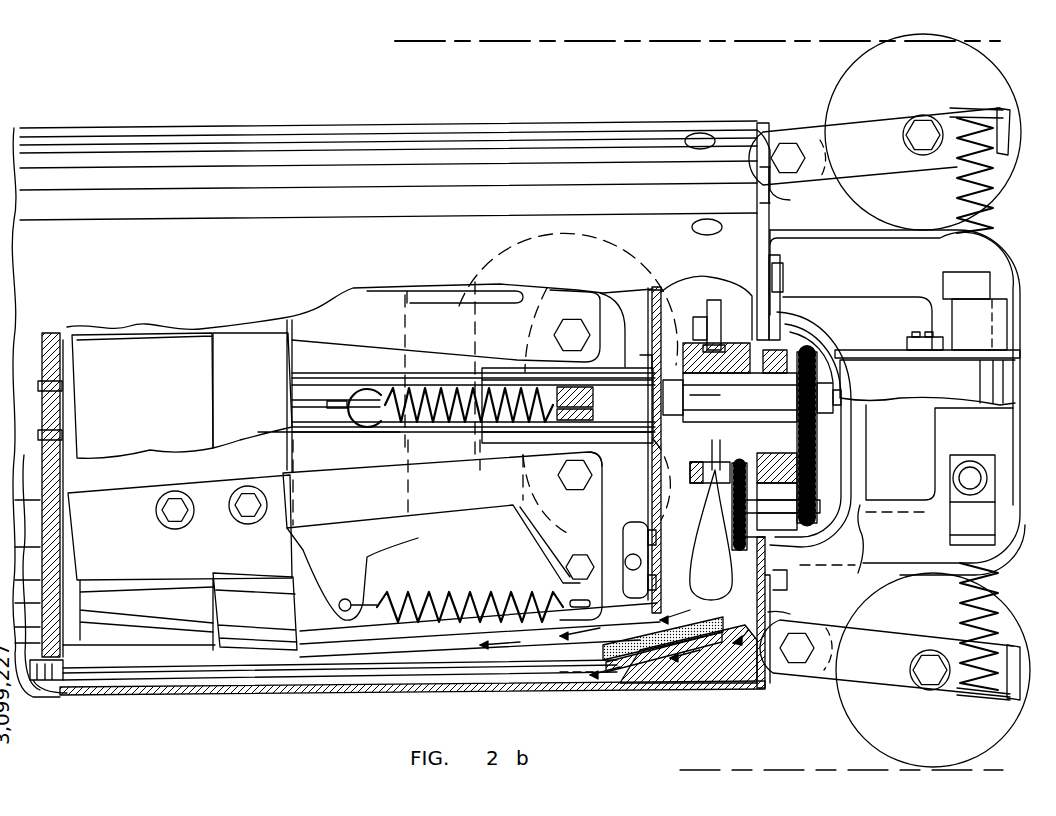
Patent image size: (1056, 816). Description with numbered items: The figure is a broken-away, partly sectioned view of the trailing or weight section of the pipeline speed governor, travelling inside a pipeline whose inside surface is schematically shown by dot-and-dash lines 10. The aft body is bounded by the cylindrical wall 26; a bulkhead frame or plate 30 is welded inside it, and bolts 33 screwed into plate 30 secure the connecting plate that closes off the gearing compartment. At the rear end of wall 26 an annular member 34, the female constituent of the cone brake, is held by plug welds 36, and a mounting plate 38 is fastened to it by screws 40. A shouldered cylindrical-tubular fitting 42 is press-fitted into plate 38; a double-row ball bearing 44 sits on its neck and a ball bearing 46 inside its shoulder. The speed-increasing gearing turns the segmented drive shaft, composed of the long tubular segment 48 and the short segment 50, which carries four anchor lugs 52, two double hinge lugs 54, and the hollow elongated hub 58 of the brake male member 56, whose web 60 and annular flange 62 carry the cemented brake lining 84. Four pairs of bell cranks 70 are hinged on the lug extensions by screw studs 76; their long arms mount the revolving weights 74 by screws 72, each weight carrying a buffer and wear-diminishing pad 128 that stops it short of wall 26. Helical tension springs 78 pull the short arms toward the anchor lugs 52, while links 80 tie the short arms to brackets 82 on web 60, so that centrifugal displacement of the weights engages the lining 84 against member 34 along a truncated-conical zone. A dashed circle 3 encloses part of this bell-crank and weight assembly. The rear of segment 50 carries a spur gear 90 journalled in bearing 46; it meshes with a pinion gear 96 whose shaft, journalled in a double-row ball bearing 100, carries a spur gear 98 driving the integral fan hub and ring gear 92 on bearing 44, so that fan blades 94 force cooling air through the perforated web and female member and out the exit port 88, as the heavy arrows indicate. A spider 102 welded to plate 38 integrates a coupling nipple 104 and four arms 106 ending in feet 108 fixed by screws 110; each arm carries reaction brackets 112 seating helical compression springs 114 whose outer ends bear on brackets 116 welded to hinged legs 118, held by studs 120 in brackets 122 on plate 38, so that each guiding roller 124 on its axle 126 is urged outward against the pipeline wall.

The detail circle 3 is at (568, 373).
The dot-and-dash lines 10 is at (660, 41).
The cylindrical wall 26 is at (360, 286).
The bulkhead frame or plate 30 is at (60, 477).
The bolts 33 is at (66, 670).
The annular member 34 is at (682, 682).
The plug welds 36 is at (707, 218).
The mounting plate 38 is at (735, 680).
The screws 40 is at (770, 190).
The shouldered cylindrical-tubular fitting 42 is at (745, 380).
The double-row ball bearing 44 is at (685, 360).
The ball bearing 46 is at (810, 460).
The tubular relatively long segment 48 is at (290, 438).
The relatively short segment 50 is at (703, 402).
The anchor lugs 52 is at (471, 484).
The double hinge lugs 54 is at (618, 290).
The brake male member 56 is at (650, 370).
The hollow elongated hub 58 is at (496, 483).
The web 60 is at (680, 292).
The annular flange 62 is at (614, 483).
The bell cranks 70 is at (454, 451).
The screws 72 is at (245, 490).
The revolving weights 74 is at (180, 486).
The screw stud 76 is at (573, 449).
The helical tension springs 78 is at (395, 428).
The links 80 is at (622, 420).
The brackets 82 is at (612, 390).
The brake lining 84 is at (590, 675).
The cooling air exit port 88 is at (398, 686).
The spur gear 90 is at (820, 440).
The integral fan hub and ring gear 92 is at (720, 305).
The fan blades 94 is at (711, 520).
The pinion gear 96 is at (862, 540).
The spur gear 98 is at (740, 518).
The double-row ball bearing 100 is at (803, 545).
The spider 102 is at (852, 500).
The coupling nipple 104 is at (925, 408).
The arms 106 is at (857, 308).
The pad or foot 108 is at (778, 262).
The screws 110 is at (783, 221).
The reaction brackets 112 is at (927, 408).
The helical compression springs 114 is at (958, 193).
The brackets 116 is at (996, 106).
The hinged legs 118 is at (881, 402).
The studs 120 is at (786, 140).
The brackets 122 is at (762, 128).
The guiding rollers 124 is at (927, 400).
The axle 126 is at (912, 125).
The buffer and wear-diminishing pad 128 is at (306, 485).